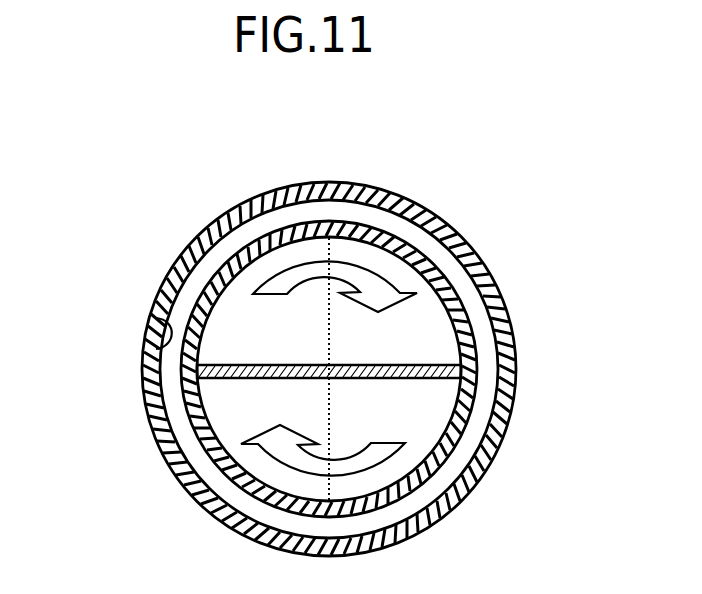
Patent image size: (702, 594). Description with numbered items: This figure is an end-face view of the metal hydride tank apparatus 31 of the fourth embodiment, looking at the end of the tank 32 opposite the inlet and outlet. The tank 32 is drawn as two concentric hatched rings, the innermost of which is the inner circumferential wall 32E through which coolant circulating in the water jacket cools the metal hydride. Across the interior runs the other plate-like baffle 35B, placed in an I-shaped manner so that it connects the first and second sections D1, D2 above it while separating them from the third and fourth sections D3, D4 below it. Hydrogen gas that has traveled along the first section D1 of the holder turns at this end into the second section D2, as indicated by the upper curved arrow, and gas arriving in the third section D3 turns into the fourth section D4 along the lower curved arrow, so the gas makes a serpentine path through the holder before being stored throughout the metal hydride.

The metal hydride tank apparatus 31 is at (270, 189).
The tank 32 is at (143, 365).
The inner circumferential wall 32E is at (148, 357).
The plate-like baffle 35B is at (380, 361).
The first section D1 is at (235, 317).
The second section D2 is at (425, 308).
The third section D3 is at (445, 462).
The fourth section D4 is at (212, 453).